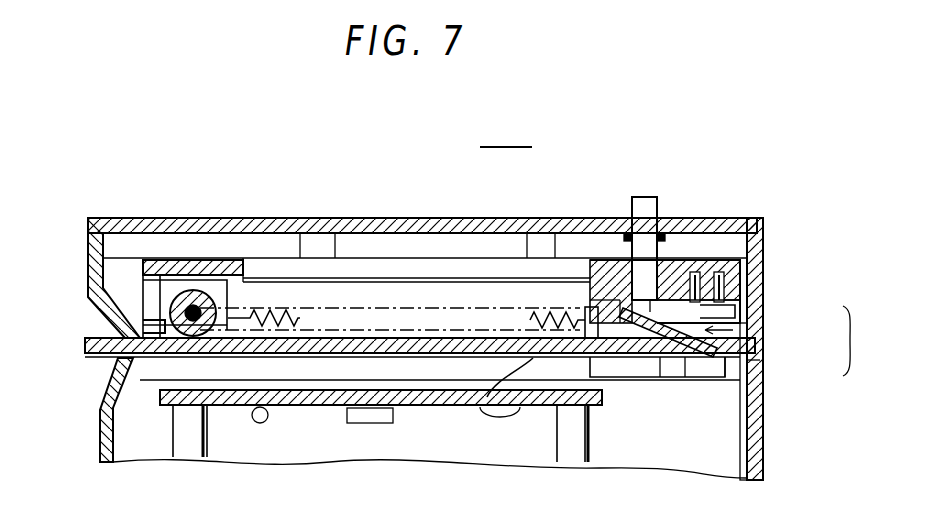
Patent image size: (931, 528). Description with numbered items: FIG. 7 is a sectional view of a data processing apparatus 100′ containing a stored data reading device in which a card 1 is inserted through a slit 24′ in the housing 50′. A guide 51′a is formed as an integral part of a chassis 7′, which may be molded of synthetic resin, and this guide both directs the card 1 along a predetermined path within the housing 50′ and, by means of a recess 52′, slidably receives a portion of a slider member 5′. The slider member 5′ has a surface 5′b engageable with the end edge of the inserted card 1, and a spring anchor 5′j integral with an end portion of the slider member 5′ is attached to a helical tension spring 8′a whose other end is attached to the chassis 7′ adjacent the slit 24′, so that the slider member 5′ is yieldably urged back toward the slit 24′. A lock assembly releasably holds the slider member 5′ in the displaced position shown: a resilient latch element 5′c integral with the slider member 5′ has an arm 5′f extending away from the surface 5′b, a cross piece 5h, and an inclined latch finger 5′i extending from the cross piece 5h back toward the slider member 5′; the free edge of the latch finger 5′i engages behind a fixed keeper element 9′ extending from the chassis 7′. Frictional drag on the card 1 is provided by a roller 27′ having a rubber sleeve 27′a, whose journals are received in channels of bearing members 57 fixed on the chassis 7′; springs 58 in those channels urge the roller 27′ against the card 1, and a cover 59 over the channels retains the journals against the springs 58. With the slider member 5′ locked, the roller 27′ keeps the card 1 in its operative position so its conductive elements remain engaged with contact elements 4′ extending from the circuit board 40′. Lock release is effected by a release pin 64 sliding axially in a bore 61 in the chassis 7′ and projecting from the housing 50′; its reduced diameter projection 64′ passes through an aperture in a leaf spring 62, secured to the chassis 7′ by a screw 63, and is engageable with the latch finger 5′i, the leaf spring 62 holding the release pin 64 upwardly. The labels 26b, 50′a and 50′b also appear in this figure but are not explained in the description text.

The slit 24′ is at (127, 218).
The helical tension spring 8′a is at (358, 305).
The chassis 7′ is at (440, 258).
The bearing members 57 is at (262, 262).
The springs 58 is at (232, 260).
The roller 26b is at (178, 292).
The rubber sleeve 27′a is at (205, 290).
The roller 27′ is at (265, 340).
The recesses 52′ is at (452, 338).
The spring anchor 5′j is at (598, 340).
The card 1 is at (96, 356).
The cover 59 is at (148, 357).
The circuit board 40′ is at (222, 405).
The contact elements 4′ is at (485, 400).
The surface 5′b is at (520, 400).
The release pin 64 is at (645, 210).
The leaf spring 62 is at (735, 262).
The bore 61 is at (700, 272).
The reduced diameter projection 64′ is at (725, 262).
The screw 63 is at (720, 300).
The guide 51′a is at (590, 275).
The keeper element 9′ is at (616, 300).
The slider member 5′ is at (604, 360).
The arm 5′f is at (688, 352).
The cross piece 5h is at (725, 378).
The inclined latch finger 5′i is at (670, 357).
The resilient latch element 5′c is at (748, 405).
The contact 50′a is at (752, 322).
The contact 50′b is at (752, 365).
The housing 50′ is at (870, 341).
The data processing apparatus 100′ is at (512, 128).